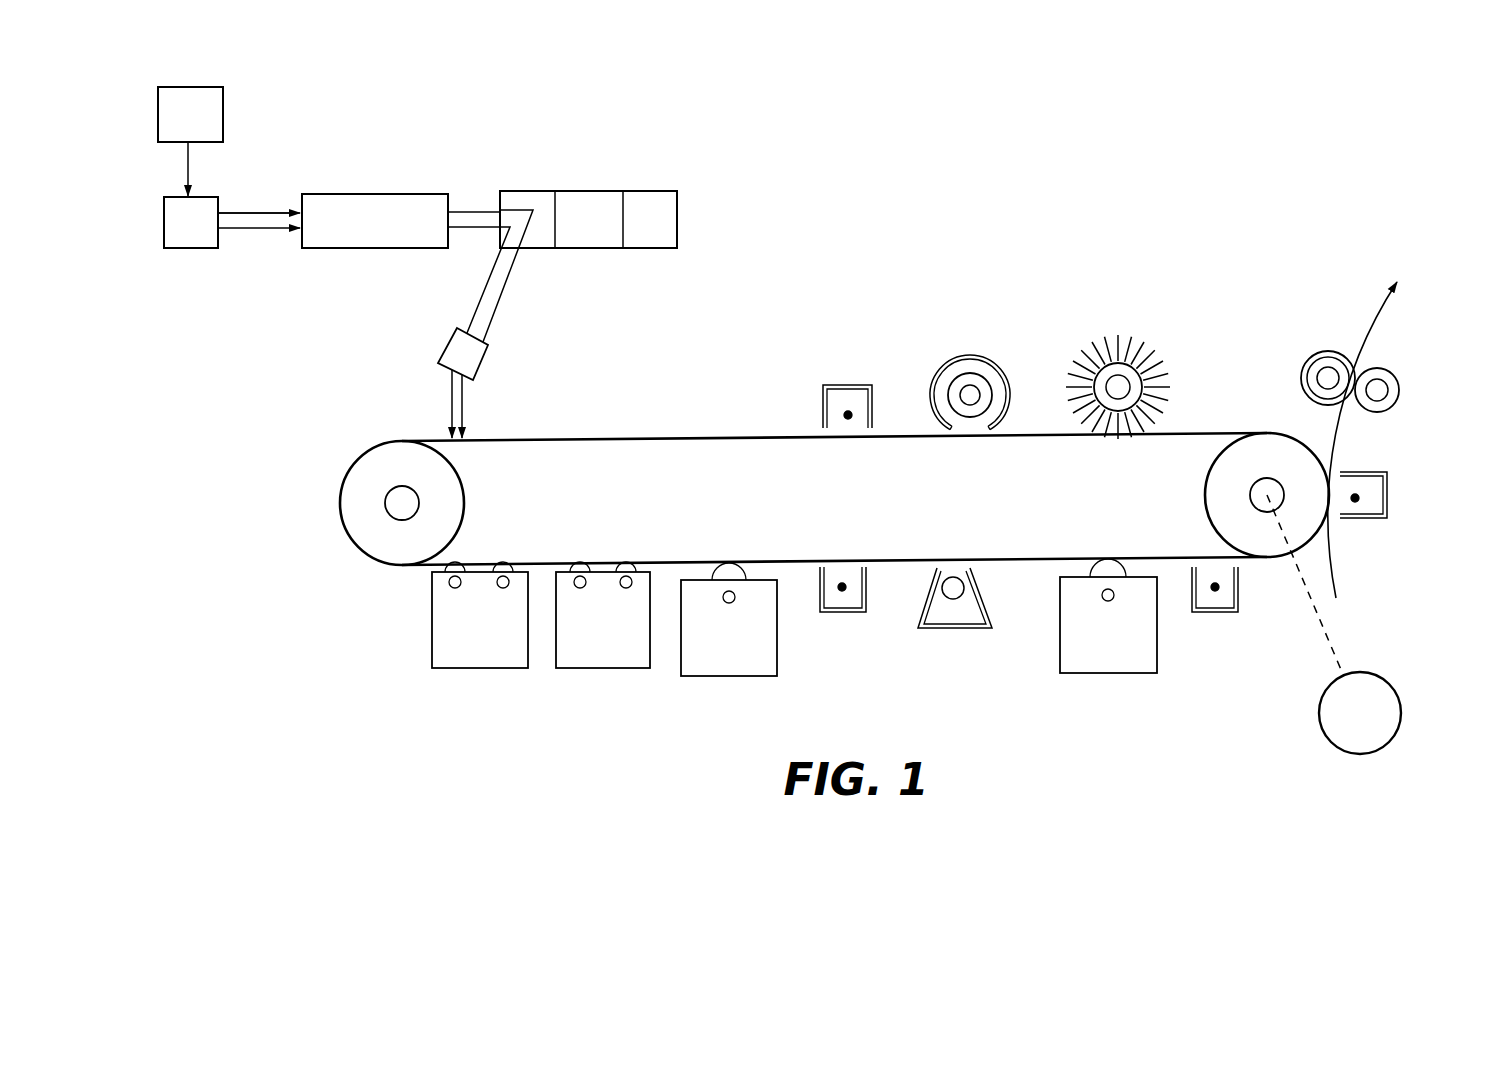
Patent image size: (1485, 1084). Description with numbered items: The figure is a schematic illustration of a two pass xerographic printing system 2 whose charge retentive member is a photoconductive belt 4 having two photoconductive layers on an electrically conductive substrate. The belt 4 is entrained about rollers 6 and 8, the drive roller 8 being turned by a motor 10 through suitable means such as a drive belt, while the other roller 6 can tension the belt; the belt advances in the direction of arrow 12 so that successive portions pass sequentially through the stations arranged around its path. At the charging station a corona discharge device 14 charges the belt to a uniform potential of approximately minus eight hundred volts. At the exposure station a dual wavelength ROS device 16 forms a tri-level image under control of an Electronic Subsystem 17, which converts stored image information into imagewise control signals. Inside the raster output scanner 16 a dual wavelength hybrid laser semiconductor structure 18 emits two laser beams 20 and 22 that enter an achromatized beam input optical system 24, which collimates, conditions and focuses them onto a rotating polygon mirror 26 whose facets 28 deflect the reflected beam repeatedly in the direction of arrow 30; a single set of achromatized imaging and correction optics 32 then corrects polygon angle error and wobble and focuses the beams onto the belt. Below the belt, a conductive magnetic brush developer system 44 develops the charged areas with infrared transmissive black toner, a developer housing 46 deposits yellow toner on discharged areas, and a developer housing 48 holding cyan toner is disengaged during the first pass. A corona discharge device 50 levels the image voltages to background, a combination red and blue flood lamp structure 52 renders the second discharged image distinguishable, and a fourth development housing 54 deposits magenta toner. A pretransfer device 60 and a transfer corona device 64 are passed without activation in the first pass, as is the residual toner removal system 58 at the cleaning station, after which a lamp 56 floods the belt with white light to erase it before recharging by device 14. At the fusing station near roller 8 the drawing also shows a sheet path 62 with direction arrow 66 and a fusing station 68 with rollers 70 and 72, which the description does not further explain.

The two pass xerographic printing system 2 is at (1170, 252).
The photoconductive belt 4 is at (346, 527).
The roller 6 is at (455, 521).
The drive roller 8 is at (1216, 491).
The motor 10 is at (1375, 741).
The arrow 12 is at (728, 446).
The corona discharge device 14 is at (823, 386).
The dual wavelength ROS device 16 is at (623, 230).
The Electronic Subsystem (ESS) 17 is at (222, 110).
The dual wavelength hybrid laser semiconductor structure 18 is at (201, 250).
The laser beam 20 is at (270, 214).
The laser beam 22 is at (243, 231).
The beam input optical system 24 is at (395, 234).
The rotating polygon mirror 26 is at (588, 246).
The facets 28 is at (547, 241).
The arrow 30 is at (511, 289).
The imaging and correction optics 32 is at (487, 362).
The Conductive Magnetic Brush developer system 44 is at (518, 660).
The CMB developer housing 46 is at (632, 660).
The developer housing 48 is at (755, 678).
The corona discharge device 50 is at (860, 613).
The combination red and blue flood lamp structure 52 is at (972, 630).
The fourth development housing 54 is at (1150, 663).
The lamp 56 is at (952, 371).
The residual toner removal system 58 is at (1093, 343).
The pretransfer device 60 is at (1232, 613).
The copy sheet path 62 is at (1338, 573).
The transfer corona device 64 is at (1383, 520).
The sheet travel direction 66 is at (1378, 310).
The fusing station 68 is at (1362, 387).
The pressure roller 70 is at (1388, 407).
The fuser roller 72 is at (1316, 367).